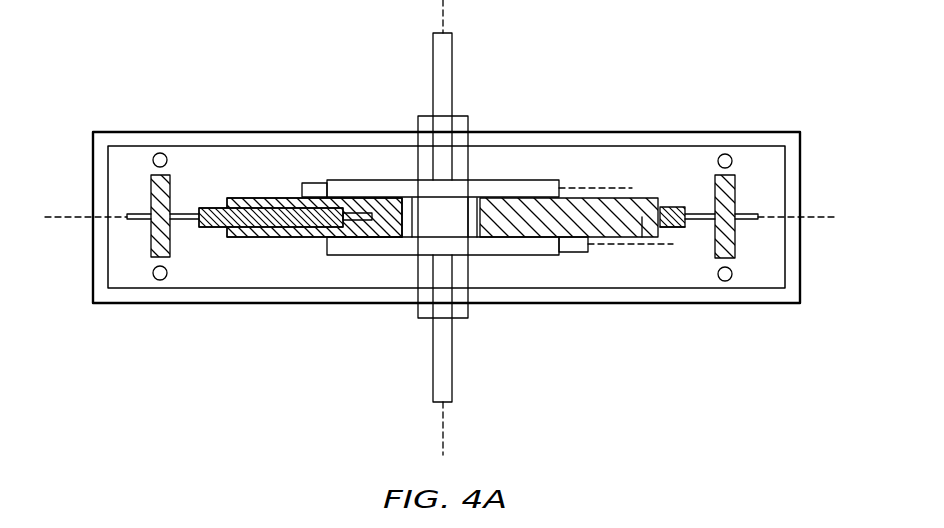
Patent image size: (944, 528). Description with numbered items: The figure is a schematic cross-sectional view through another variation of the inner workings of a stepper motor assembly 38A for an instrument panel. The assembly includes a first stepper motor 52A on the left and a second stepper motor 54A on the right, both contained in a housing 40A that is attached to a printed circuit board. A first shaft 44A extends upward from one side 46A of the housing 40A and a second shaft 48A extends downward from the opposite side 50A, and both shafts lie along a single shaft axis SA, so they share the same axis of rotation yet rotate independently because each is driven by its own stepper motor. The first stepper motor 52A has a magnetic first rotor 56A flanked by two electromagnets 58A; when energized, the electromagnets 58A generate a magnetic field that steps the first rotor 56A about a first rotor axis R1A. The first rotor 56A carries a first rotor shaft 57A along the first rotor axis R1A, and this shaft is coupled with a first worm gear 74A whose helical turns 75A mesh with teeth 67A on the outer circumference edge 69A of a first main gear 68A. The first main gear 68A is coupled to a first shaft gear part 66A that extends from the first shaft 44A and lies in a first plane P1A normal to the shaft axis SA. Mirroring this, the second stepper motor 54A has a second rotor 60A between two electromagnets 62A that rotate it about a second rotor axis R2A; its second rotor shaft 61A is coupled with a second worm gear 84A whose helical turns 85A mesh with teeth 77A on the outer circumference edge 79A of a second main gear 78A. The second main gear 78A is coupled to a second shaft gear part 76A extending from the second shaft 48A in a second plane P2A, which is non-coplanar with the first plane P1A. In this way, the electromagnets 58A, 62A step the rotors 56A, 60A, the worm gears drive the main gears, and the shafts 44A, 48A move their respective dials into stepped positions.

The stepper motor assembly 38A is at (614, 63).
The housing 40A is at (800, 268).
The first shaft 44A is at (453, 46).
The side of the housing 46A is at (494, 130).
The second shaft 48A is at (433, 380).
The side of the housing 50A is at (342, 303).
The first stepper motor 52A is at (188, 262).
The second stepper motor 54A is at (749, 168).
The first rotor 56A is at (148, 198).
The first rotor shaft 57A is at (185, 213).
The electromagnets 58A is at (160, 153).
The second rotor 60A is at (737, 197).
The second rotor shaft 61A is at (755, 220).
The electromagnets 62A is at (723, 154).
The first shaft gear part 66A is at (365, 187).
The teeth 67A is at (302, 237).
The first main gear 68A is at (260, 233).
The outer circumference edge 69A is at (365, 228).
The first worm gear 74A is at (213, 227).
The helical turns 75A is at (265, 210).
The second shaft gear part 76A is at (483, 245).
The teeth 77A is at (642, 220).
The second main gear 78A is at (533, 228).
The outer circumference edge 79A is at (583, 203).
The second worm gear 84A is at (682, 228).
The helical turns 85A is at (677, 207).
The first plane P1A is at (617, 198).
The second plane P2A is at (630, 245).
The first rotor axis R1A is at (55, 220).
The second rotor axis R2A is at (822, 220).
The shaft axis SA is at (443, 437).